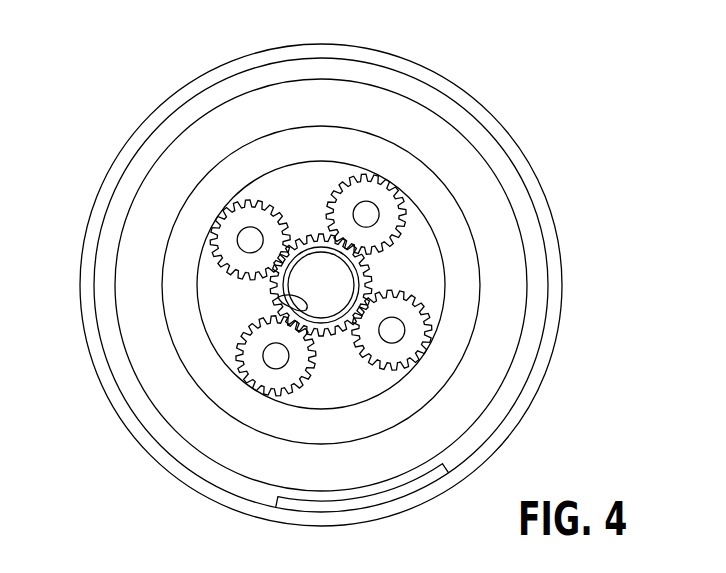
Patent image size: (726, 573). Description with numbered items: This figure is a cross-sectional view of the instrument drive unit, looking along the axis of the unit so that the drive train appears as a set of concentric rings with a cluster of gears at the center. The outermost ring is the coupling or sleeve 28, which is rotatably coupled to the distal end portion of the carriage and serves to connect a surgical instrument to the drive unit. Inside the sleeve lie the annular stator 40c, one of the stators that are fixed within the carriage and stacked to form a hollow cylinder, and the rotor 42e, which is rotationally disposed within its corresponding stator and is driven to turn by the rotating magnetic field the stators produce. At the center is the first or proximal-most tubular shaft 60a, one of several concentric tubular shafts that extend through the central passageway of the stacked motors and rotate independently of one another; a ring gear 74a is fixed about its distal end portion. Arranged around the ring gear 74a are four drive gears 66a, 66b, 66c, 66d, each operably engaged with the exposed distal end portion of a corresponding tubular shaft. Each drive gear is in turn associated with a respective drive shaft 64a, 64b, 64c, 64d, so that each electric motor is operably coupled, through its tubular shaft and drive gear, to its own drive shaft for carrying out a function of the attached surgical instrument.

The sleeve 28 is at (550, 307).
The stator 40c is at (482, 390).
The rotor 42e is at (460, 253).
The first tubular shaft 60a is at (297, 298).
The ring gear 74a is at (321, 233).
The drive gear 66a is at (378, 178).
The drive gear 66b is at (410, 362).
The drive gear 66c is at (235, 198).
The drive gear 66d is at (268, 392).
The drive shaft 64a is at (380, 212).
The drive shaft 64b is at (383, 343).
The drive shaft 64c is at (238, 238).
The drive shaft 64d is at (263, 357).